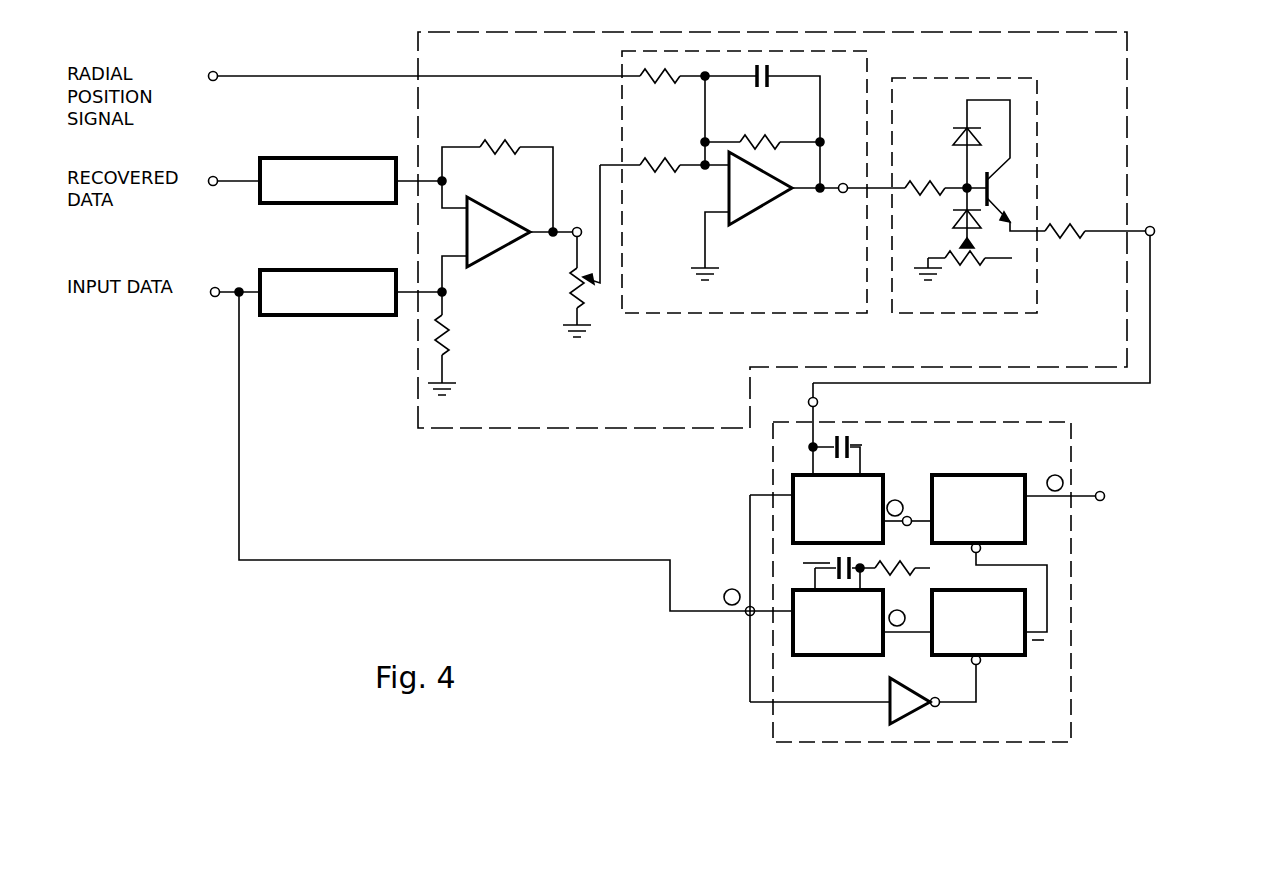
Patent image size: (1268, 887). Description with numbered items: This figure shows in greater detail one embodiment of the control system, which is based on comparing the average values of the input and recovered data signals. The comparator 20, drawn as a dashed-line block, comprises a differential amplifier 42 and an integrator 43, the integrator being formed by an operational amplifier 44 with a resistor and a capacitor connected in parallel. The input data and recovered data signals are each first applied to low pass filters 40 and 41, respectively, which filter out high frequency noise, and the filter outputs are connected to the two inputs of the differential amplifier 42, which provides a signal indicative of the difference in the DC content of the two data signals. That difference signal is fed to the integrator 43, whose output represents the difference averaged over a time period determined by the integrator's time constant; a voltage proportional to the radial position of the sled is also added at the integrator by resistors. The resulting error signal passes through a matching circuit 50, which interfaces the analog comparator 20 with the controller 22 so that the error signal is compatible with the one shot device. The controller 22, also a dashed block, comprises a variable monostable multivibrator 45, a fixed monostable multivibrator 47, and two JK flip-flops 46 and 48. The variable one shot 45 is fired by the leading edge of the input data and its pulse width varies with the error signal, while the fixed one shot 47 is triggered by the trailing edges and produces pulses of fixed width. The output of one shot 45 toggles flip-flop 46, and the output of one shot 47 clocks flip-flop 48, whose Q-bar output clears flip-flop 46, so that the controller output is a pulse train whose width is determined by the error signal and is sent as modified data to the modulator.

The comparator 20 is at (1122, 140).
The controller 22 is at (1070, 478).
The low pass filter 40 is at (328, 270).
The low pass filter 41 is at (326, 158).
The differential amplifier 42 is at (492, 212).
The integrator 43 is at (769, 175).
The operational amplifier 44 is at (766, 186).
The variable monostable multivibrator 45 is at (880, 485).
The JK flip-flop 46 is at (1003, 480).
The fixed monostable multivibrator 47 is at (850, 655).
The JK flip-flop 48 is at (995, 655).
The matching circuit 50 is at (1035, 95).